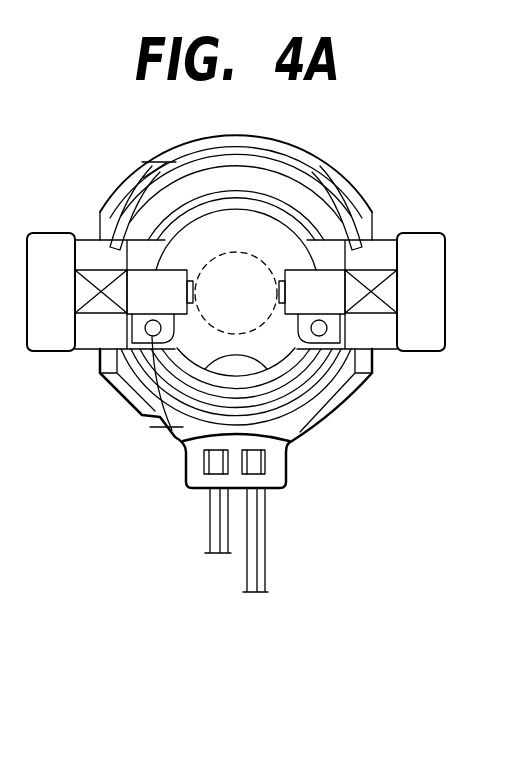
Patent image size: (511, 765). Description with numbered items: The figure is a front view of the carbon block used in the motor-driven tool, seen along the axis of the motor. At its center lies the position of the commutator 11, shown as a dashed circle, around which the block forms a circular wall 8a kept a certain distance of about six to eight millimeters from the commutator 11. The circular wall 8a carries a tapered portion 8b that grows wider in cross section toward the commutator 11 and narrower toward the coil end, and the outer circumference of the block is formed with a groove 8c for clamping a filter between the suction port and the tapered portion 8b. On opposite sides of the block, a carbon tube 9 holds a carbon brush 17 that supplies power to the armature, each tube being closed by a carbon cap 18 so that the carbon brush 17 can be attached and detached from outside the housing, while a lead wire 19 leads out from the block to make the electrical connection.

The circular wall 8a is at (288, 442).
The tapered portion 8b is at (263, 205).
The groove 8c is at (113, 200).
The carbon tube 9 is at (308, 248).
The commutator 11 is at (210, 252).
The carbon brush 17 is at (319, 337).
The carbon cap 18 is at (432, 345).
The lead wire 19 is at (210, 520).